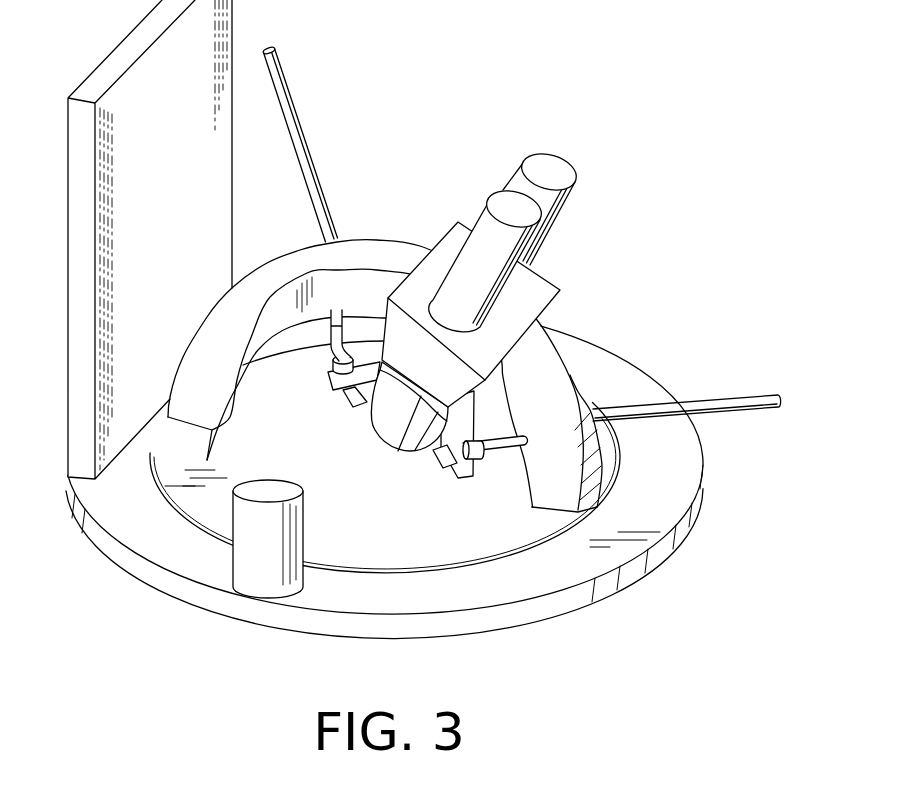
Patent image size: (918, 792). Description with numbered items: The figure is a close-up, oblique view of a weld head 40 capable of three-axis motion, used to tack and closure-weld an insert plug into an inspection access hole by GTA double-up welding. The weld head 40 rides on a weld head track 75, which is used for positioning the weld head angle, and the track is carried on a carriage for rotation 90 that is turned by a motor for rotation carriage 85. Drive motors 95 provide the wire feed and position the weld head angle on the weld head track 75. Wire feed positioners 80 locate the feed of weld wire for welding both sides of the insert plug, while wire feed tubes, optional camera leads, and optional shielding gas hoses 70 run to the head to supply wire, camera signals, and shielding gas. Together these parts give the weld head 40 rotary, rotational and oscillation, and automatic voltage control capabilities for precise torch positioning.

The weld head 40 is at (433, 330).
The wire feed tubes, camera leads and shielding gas hoses 70 is at (299, 117).
The weld head track 75 is at (197, 365).
The wire feed positioners 80 is at (328, 368).
The motor for rotation carriage 85 is at (245, 553).
The carriage for rotation 90 is at (673, 463).
The drive motors 95 is at (497, 192).